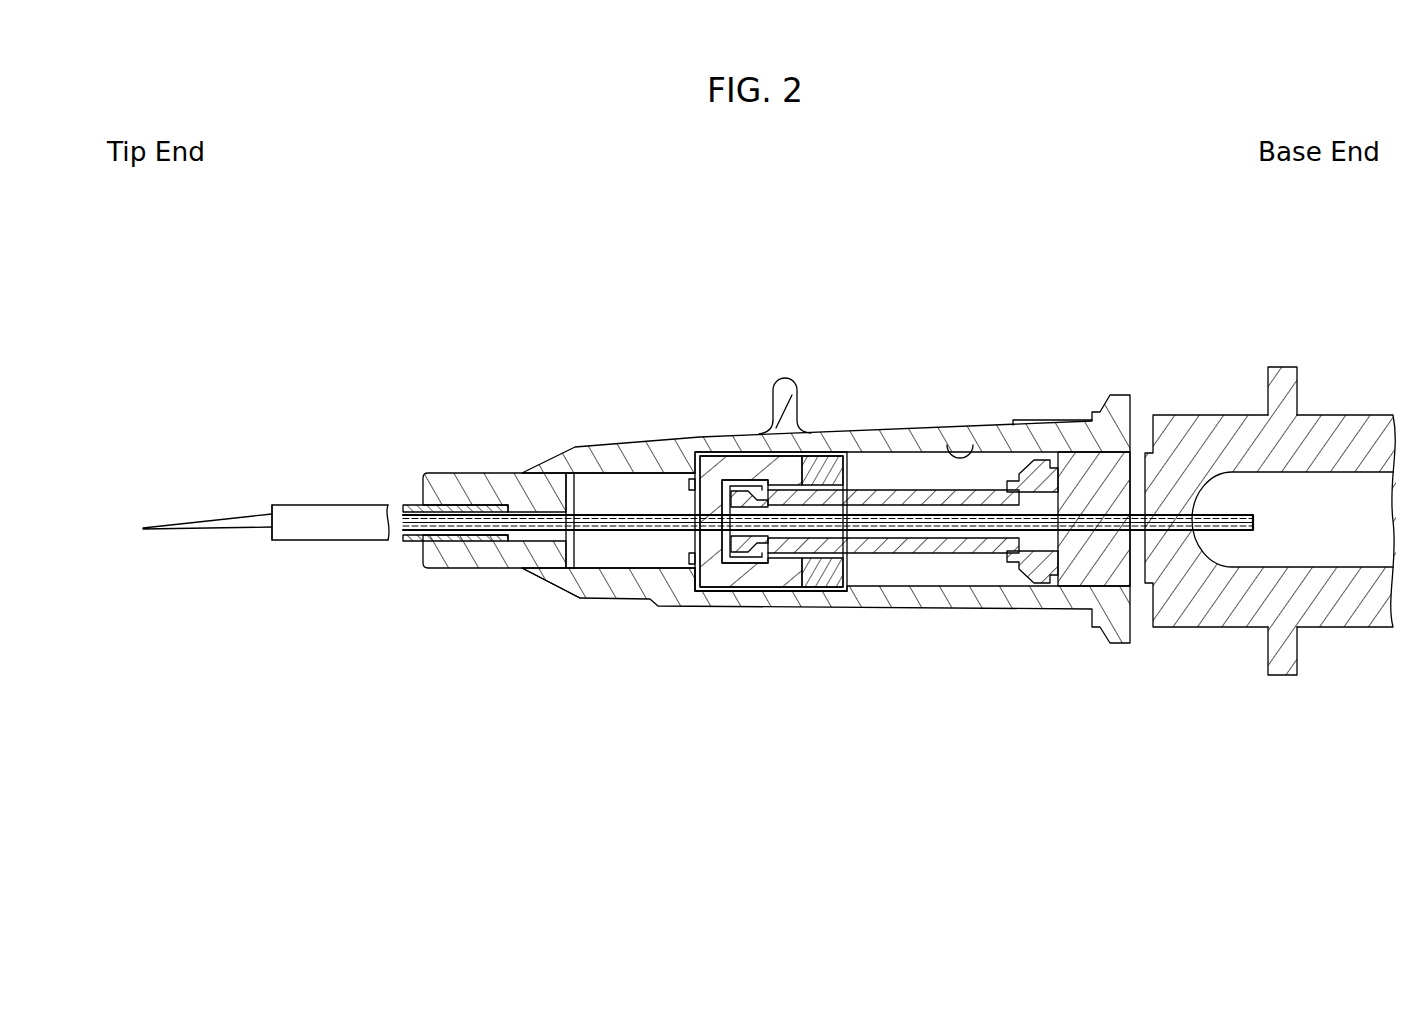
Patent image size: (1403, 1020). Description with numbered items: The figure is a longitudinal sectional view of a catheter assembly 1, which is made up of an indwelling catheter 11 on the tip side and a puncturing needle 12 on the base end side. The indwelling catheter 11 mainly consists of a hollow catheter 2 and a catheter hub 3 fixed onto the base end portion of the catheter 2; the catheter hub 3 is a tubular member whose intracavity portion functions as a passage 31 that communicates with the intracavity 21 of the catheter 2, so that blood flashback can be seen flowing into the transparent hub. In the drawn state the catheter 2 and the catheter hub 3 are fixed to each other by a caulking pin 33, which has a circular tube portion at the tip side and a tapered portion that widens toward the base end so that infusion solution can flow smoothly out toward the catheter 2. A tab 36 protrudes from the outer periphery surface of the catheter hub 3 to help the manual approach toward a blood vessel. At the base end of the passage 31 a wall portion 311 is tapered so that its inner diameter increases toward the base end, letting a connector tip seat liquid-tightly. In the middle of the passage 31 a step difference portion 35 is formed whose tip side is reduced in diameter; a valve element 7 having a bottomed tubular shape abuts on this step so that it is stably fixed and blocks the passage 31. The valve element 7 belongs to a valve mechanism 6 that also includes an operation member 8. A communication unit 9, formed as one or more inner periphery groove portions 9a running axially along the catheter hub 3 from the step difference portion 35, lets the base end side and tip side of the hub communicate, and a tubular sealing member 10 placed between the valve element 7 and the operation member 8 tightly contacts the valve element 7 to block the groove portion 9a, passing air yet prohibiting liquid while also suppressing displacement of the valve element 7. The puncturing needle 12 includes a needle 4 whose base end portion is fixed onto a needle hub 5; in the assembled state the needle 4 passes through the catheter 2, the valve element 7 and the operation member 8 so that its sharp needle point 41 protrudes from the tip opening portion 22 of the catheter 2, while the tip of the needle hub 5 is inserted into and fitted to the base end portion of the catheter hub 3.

The catheter assembly 1 is at (1105, 290).
The catheter 2 is at (331, 512).
The catheter hub 3 is at (587, 457).
The needle 4 is at (1180, 535).
The needle hub 5 is at (1318, 630).
The valve mechanism 6 is at (918, 306).
The valve element 7 is at (747, 467).
The operation member 8 is at (887, 493).
The communication unit 9 is at (734, 590).
The inner periphery groove portion 9a is at (749, 521).
The sealing member 10 is at (828, 582).
The indwelling catheter 11 is at (585, 393).
The puncturing needle 12 is at (1182, 736).
The intracavity 21 is at (446, 490).
The tip opening portion 22 is at (266, 512).
The passage 31 is at (652, 483).
The caulking pin 33 is at (594, 577).
The step difference portion 35 is at (687, 586).
The tab 36 is at (787, 384).
The needle point 41 is at (144, 530).
The wall portion 311 is at (964, 445).